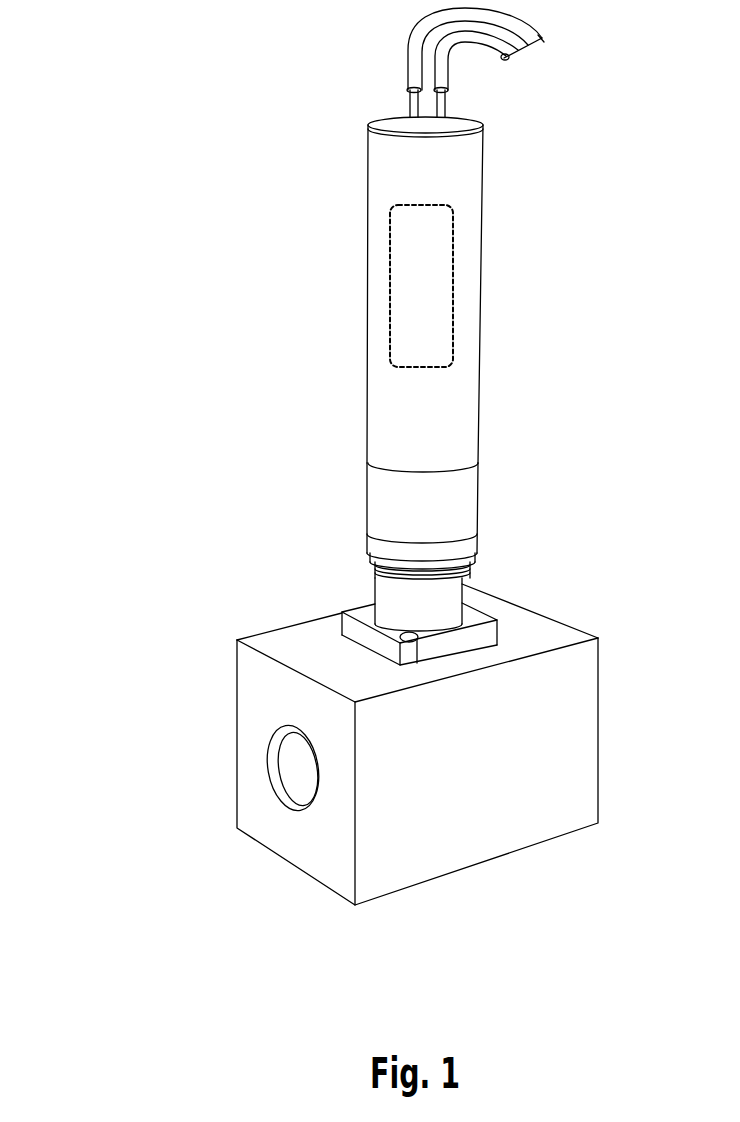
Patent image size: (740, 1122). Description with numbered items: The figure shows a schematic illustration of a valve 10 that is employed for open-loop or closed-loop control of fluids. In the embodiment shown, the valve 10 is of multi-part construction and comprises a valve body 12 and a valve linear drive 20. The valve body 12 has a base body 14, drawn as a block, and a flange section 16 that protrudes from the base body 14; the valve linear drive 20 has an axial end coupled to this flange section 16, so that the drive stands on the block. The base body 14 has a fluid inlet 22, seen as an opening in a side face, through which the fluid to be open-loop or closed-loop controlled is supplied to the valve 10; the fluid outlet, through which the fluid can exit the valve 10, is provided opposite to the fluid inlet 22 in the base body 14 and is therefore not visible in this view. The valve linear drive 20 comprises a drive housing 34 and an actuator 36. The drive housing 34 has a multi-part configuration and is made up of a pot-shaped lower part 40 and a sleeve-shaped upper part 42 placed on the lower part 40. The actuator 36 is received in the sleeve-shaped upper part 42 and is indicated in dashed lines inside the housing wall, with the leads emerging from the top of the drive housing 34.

The valve 10 is at (89, 160).
The valve body 12 is at (90, 663).
The base body 14 is at (560, 747).
The flange section 16 is at (447, 598).
The valve linear drive 20 is at (197, 320).
The fluid inlet 22 is at (297, 769).
The drive housing 34 is at (356, 420).
The actuator 36 is at (433, 287).
The pot-shaped lower part 40 is at (447, 508).
The sleeve-shaped upper part 42 is at (458, 397).